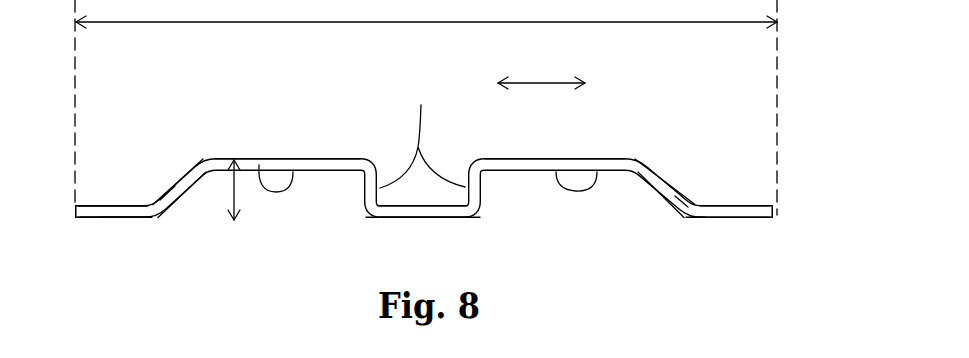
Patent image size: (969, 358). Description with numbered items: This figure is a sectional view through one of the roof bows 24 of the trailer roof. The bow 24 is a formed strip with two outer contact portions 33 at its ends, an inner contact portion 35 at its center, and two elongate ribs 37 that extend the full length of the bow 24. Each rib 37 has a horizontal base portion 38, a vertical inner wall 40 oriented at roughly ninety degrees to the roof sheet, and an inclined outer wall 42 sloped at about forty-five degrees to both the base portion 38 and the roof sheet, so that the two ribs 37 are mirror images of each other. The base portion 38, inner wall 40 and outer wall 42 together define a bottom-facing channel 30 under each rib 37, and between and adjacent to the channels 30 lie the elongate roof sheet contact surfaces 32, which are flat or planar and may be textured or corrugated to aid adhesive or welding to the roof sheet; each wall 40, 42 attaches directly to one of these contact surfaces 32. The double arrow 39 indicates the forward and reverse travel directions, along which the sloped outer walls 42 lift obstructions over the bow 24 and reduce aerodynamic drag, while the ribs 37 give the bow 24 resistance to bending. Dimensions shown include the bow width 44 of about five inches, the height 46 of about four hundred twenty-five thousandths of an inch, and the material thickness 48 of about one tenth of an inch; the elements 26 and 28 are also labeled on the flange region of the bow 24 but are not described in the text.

The bow 24 is at (318, 100).
The flange portion 26 is at (122, 205).
The bottom surface of flange 28 is at (135, 221).
The bottom-facing channel 30 is at (317, 190).
The roof sheet contact surface 32 is at (92, 220).
The outer contact portion 33 is at (115, 212).
The inner contact portion 35 is at (412, 213).
The elongate rib 37 is at (324, 163).
The horizontal base portion 38 is at (259, 165).
The double arrow 39 is at (548, 83).
The vertical inner wall 40 is at (422, 129).
The inclined outer wall 42 is at (172, 182).
The width 44 is at (396, 23).
The height 46 is at (238, 193).
The thickness 48 is at (685, 215).